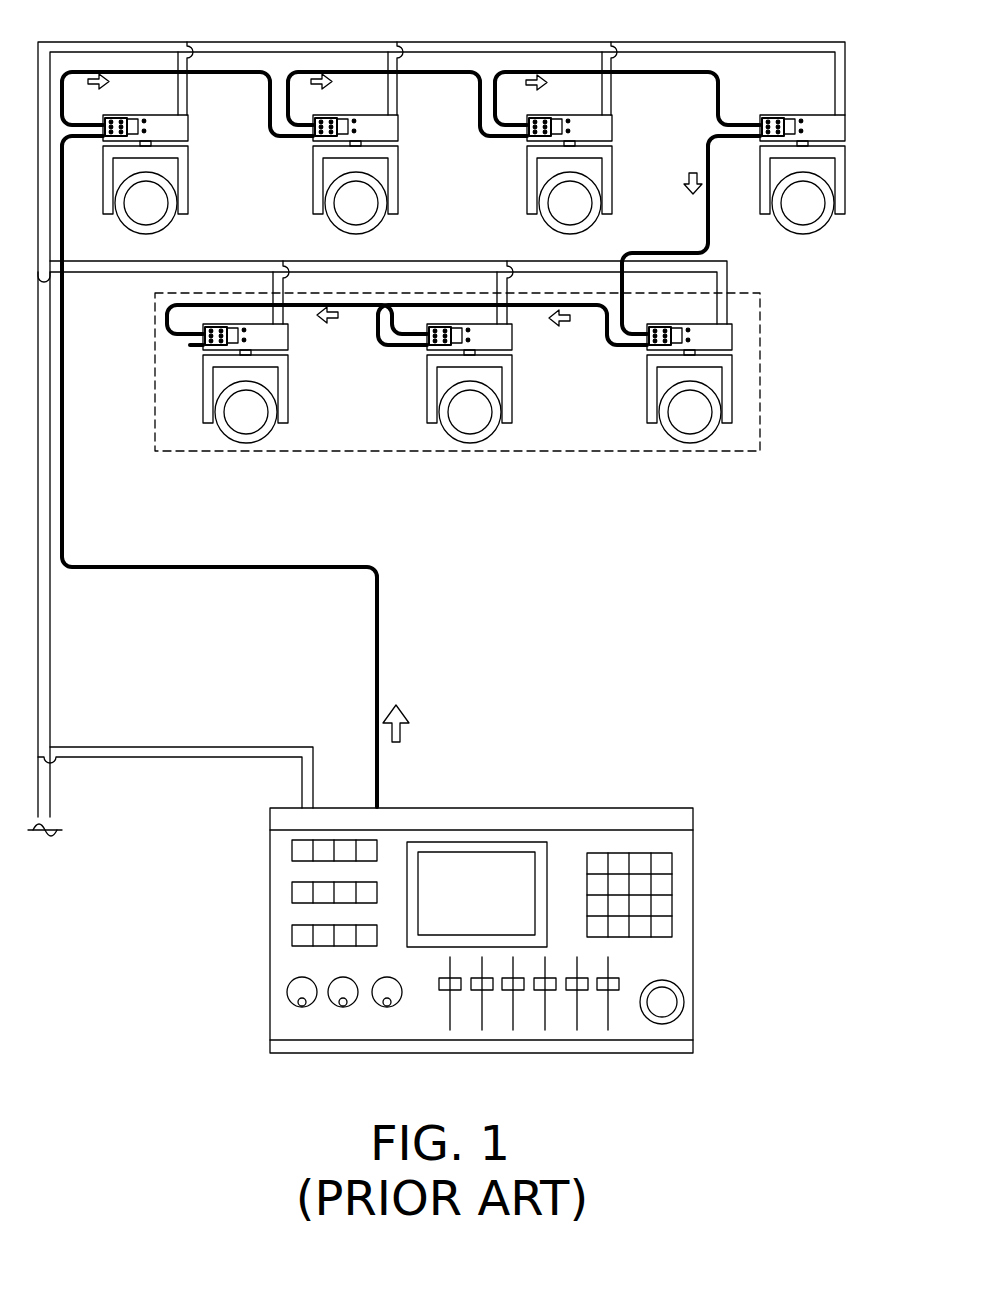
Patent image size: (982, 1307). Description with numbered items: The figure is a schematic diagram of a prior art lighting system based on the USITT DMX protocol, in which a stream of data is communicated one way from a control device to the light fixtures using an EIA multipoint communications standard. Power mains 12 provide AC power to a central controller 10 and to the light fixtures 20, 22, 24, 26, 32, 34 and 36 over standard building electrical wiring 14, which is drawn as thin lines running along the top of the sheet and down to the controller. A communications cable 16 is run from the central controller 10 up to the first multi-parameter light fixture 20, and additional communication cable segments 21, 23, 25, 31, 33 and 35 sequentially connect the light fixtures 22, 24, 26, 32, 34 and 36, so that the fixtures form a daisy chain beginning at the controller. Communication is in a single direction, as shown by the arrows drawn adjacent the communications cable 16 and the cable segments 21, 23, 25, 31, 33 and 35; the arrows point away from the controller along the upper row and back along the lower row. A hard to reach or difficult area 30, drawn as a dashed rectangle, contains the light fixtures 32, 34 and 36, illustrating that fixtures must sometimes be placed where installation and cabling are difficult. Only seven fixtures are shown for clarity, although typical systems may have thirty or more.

The central controller 10 is at (263, 935).
The power mains 12 is at (50, 812).
The standard building electrical wiring 14 is at (133, 745).
The communications cable 16 is at (375, 683).
The first multi-parameter light fixture 20 is at (188, 192).
The communication cable segment 21 is at (217, 70).
The light fixture 22 is at (313, 200).
The communication cable segment 23 is at (433, 72).
The light fixture 24 is at (527, 200).
The communication cable segment 25 is at (667, 70).
The light fixture 26 is at (845, 203).
The hard to reach or difficult area 30 is at (610, 443).
The communication cable segment 31 is at (712, 240).
The light fixture 32 is at (647, 400).
The communication cable segment 33 is at (422, 303).
The light fixture 34 is at (422, 398).
The communication cable segment 35 is at (160, 318).
The light fixture 36 is at (288, 415).